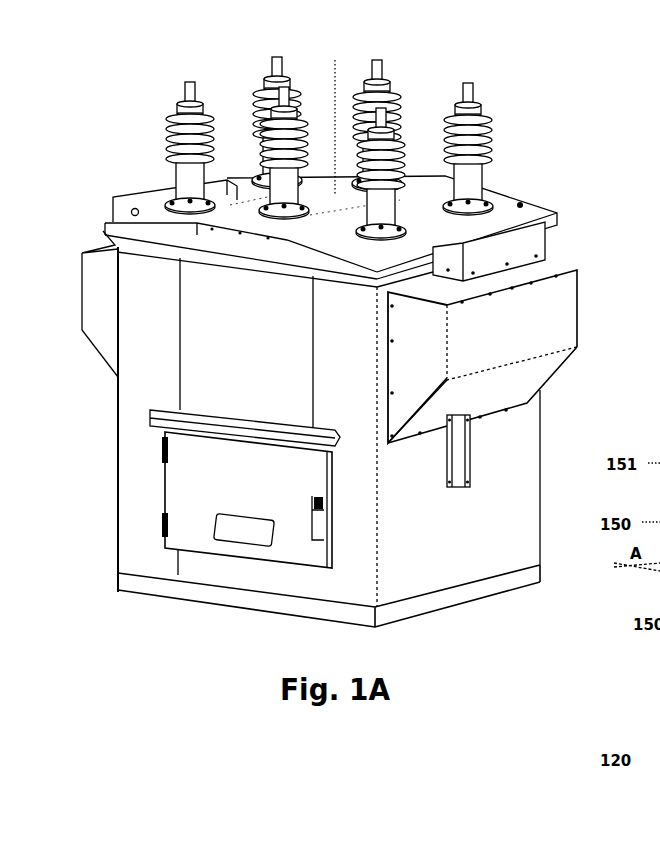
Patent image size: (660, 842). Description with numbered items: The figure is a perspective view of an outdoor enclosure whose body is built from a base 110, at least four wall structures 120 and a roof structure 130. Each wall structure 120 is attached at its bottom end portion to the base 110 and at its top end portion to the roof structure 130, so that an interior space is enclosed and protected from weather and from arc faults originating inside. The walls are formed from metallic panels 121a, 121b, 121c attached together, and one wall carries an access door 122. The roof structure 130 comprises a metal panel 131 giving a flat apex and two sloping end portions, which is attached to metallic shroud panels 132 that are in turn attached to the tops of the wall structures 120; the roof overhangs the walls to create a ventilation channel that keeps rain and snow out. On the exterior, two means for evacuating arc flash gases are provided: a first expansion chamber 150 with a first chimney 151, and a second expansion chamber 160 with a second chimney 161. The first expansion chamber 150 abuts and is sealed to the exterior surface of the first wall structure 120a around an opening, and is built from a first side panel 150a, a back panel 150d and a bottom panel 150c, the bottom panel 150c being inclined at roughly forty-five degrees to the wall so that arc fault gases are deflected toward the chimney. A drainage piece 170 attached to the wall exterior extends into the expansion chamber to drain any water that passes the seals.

The base 110 is at (190, 590).
The wall structures 120 is at (357, 563).
The first wall structure 120a is at (516, 477).
The metallic panel 121a is at (155, 416).
The metallic panel 121b is at (270, 353).
The metallic panel 121c is at (351, 447).
The access door 122 is at (253, 487).
The roof structure 130 is at (550, 190).
The metal panel 131 is at (337, 116).
The metallic shroud panel 132 is at (255, 244).
The first expansion chamber 150 is at (523, 356).
The first side panel 150a is at (417, 367).
The bottom panel 150c is at (503, 378).
The back panel 150d is at (512, 325).
The first chimney 151 is at (558, 250).
The second expansion chamber 160 is at (84, 245).
The second chimney 161 is at (103, 203).
The drainage piece 170 is at (462, 448).